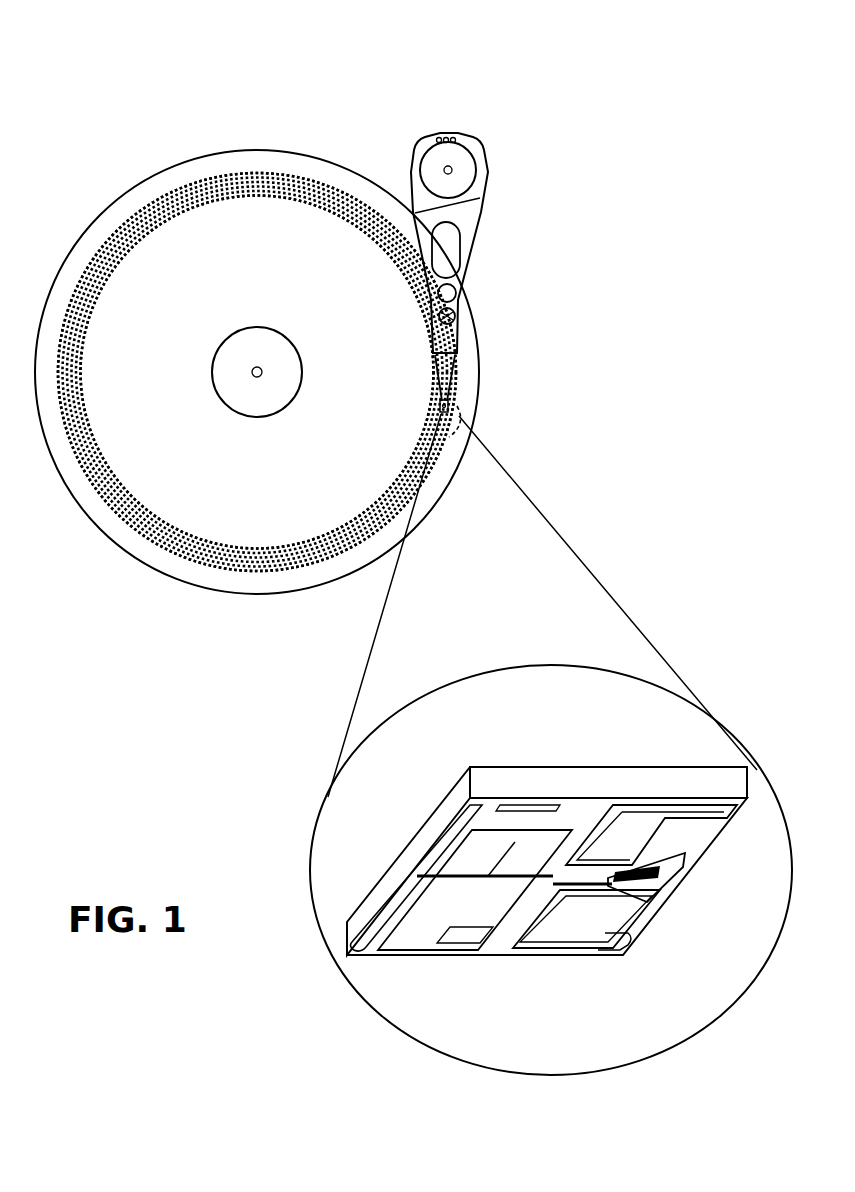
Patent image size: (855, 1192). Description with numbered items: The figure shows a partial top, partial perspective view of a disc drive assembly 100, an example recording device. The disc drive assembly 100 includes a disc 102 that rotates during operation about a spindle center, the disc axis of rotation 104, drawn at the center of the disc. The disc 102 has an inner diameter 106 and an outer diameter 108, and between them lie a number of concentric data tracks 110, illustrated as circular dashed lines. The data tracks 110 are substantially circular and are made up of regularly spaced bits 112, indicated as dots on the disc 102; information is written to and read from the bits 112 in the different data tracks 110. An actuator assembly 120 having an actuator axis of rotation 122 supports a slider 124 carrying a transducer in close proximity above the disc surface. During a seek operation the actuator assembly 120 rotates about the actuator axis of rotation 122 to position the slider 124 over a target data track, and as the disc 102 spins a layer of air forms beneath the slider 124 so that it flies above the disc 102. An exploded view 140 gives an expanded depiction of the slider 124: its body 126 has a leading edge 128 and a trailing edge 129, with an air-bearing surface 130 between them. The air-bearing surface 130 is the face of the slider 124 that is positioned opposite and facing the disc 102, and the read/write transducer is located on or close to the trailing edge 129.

The disc drive assembly 100 is at (104, 70).
The disc 102 is at (300, 153).
The disc axis of rotation 104 is at (254, 369).
The inner diameter 106 is at (243, 330).
The outer diameter 108 is at (228, 172).
The data tracks 110 is at (100, 495).
The bits 112 is at (207, 560).
The actuator assembly 120 is at (480, 228).
The actuator axis of rotation 122 is at (452, 168).
The slider 124 is at (443, 418).
The body 126 is at (555, 766).
The leading edge 128 is at (437, 832).
The trailing edge 129 is at (648, 910).
The air-bearing surface 130 is at (556, 872).
The exploded view 140 is at (549, 667).